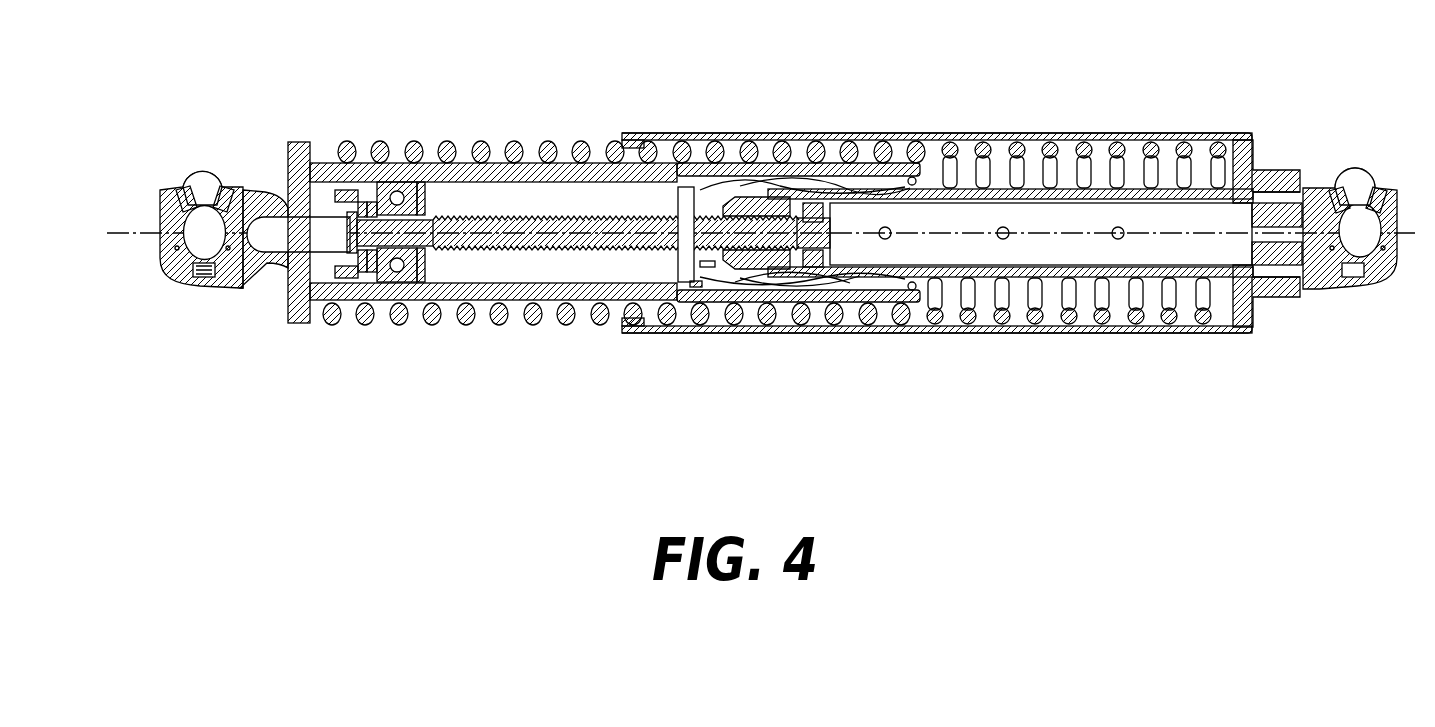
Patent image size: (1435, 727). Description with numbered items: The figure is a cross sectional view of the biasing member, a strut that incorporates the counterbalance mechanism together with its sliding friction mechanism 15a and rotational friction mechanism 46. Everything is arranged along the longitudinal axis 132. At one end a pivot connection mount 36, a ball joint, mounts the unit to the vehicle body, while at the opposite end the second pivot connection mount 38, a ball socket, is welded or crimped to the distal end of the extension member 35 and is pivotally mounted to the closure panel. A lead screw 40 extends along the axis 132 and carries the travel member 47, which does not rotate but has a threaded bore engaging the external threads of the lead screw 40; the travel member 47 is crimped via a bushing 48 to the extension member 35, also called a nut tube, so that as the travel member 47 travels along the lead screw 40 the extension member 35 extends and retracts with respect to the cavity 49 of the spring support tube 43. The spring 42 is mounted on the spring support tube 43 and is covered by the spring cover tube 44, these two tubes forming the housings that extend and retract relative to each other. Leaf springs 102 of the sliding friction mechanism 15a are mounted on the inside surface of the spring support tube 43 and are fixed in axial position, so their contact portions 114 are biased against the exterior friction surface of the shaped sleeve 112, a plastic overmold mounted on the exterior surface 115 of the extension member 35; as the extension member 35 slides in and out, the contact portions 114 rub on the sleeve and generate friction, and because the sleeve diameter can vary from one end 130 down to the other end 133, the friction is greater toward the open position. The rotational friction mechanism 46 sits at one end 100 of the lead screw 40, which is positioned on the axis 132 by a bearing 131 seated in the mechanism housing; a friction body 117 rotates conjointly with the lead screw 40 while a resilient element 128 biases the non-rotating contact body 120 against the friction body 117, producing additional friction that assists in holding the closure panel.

The pivot connection mount 36 is at (170, 181).
The second pivot connection mount 38 is at (1327, 296).
The lead screw 40 is at (609, 252).
The spring 42 is at (346, 137).
The spring support tube 43 is at (572, 149).
The spring cover tube 44 is at (1100, 131).
The rotational friction mechanism 46 is at (331, 269).
The travel member 47 is at (712, 268).
The bushing 48 is at (810, 204).
The cavity 49 is at (513, 187).
The end of the lead screw 100 is at (385, 138).
The leaf springs 102 is at (740, 178).
The shaped sleeve 112 is at (849, 285).
The contact portions 114 is at (756, 182).
The exterior surface 115 is at (1188, 189).
The friction body 117 is at (368, 200).
The contact body 120 is at (373, 273).
The resilient element 128 is at (335, 279).
The end of the extension member 130 is at (676, 198).
The bearing 131 is at (401, 181).
The longitudinal axis 132 is at (108, 240).
The another end of the extension member 133 is at (1258, 162).
The sliding friction mechanism 15a is at (904, 160).
The extension member 35 is at (1200, 279).